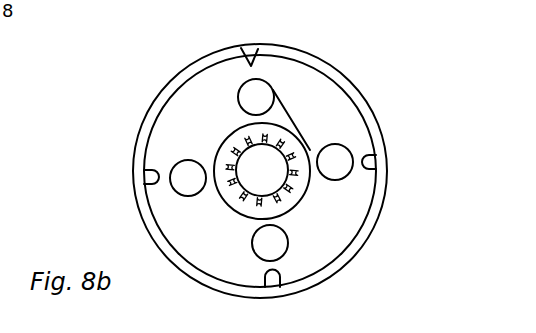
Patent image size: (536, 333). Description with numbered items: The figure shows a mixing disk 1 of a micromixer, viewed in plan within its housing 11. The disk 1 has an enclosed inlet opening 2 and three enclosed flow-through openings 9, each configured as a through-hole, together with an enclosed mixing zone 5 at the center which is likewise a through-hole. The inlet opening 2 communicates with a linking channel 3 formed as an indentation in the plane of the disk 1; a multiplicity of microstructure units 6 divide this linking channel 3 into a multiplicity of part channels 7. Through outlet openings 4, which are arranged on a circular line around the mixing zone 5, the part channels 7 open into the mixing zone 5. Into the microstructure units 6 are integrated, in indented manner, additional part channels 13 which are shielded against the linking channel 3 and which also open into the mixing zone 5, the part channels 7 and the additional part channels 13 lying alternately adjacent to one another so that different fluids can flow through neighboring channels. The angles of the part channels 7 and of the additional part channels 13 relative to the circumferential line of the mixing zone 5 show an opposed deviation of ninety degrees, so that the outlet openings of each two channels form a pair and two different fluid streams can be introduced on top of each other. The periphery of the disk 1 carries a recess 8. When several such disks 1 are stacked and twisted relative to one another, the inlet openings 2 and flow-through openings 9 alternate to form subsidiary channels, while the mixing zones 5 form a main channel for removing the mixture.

The disk 1 is at (325, 97).
The inlet opening 2 is at (263, 91).
The linking channel 3 is at (280, 122).
The outlet opening 4 is at (310, 143).
The mixing zone 5 is at (255, 173).
The microstructure unit 6 is at (262, 141).
The part channel 7 is at (230, 151).
The recess 8 is at (375, 166).
The flow-through opening 9 is at (184, 177).
The housing 11 is at (245, 193).
The additional part channel 13 is at (233, 160).